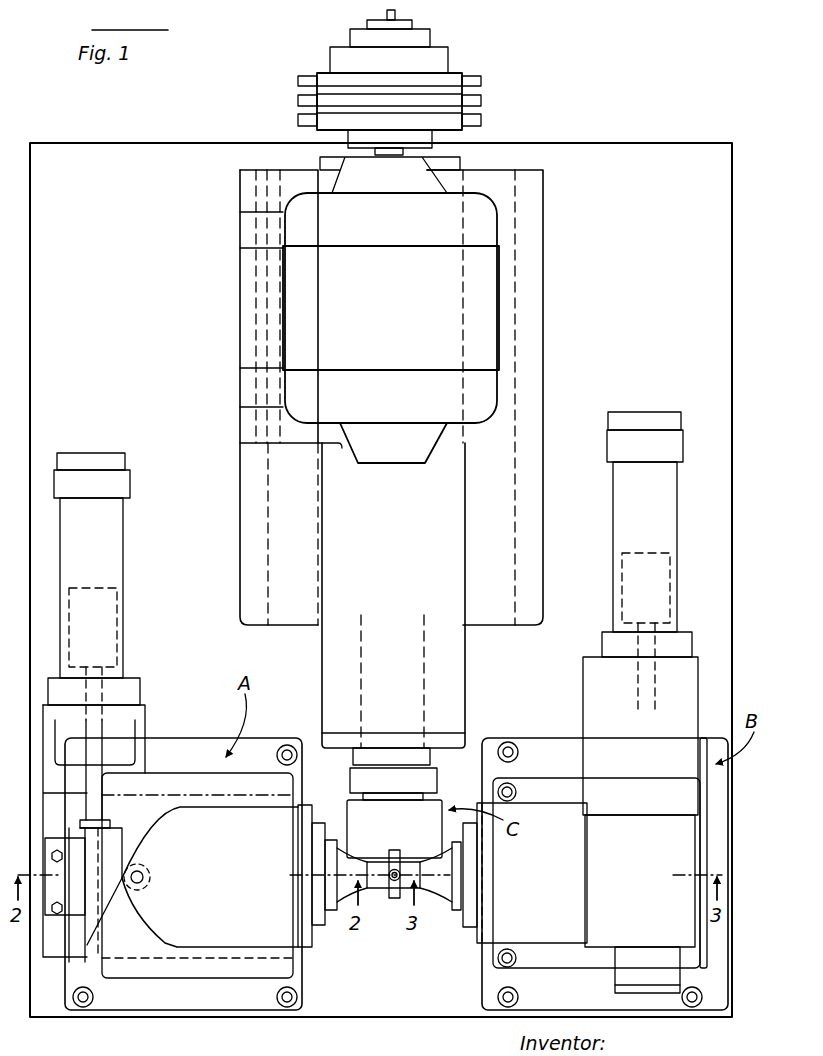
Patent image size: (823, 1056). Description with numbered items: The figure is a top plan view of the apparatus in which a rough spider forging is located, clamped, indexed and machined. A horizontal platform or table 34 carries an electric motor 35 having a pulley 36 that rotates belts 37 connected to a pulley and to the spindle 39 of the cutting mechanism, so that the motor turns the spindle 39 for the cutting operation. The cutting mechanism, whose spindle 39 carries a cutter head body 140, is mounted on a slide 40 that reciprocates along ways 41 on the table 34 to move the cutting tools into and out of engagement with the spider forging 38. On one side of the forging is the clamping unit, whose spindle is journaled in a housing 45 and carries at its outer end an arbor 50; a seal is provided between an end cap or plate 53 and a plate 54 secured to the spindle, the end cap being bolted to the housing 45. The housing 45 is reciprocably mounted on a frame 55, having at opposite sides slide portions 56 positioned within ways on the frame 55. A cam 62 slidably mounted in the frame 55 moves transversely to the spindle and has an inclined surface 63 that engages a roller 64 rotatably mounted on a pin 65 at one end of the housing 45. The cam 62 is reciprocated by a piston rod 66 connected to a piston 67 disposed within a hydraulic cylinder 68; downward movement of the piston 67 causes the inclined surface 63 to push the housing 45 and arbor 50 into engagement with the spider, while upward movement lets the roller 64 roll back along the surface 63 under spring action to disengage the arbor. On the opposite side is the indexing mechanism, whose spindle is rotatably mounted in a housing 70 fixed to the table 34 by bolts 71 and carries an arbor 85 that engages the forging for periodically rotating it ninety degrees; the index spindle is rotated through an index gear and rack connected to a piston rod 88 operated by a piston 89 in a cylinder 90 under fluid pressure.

The table 34 is at (646, 146).
The electric motor 35 is at (490, 300).
The pulley 36 is at (440, 60).
The belts 37 is at (481, 80).
The spider forging 38 is at (394, 901).
The spindle 39 is at (425, 685).
The slide 40 is at (352, 595).
The ways 41 is at (268, 500).
The housing 45 is at (217, 876).
The arbor 50 is at (376, 894).
The end cap 53 is at (310, 942).
The plate 54 is at (320, 915).
The frame 55 is at (63, 994).
The slide portions 56 is at (205, 958).
The cam 62 is at (118, 832).
The inclined surface 63 is at (116, 903).
The roller 64 is at (150, 867).
The pin 65 is at (144, 883).
The piston rod 66 is at (97, 735).
The piston 67 is at (118, 622).
The hydraulic cylinder 68 is at (123, 548).
The housing 70 is at (587, 825).
The bolts 71 is at (509, 744).
The arbor 85 is at (437, 894).
The piston rod 88 is at (640, 683).
The piston 89 is at (670, 578).
The cylinder 90 is at (677, 508).
The cutter head body 140 is at (346, 808).